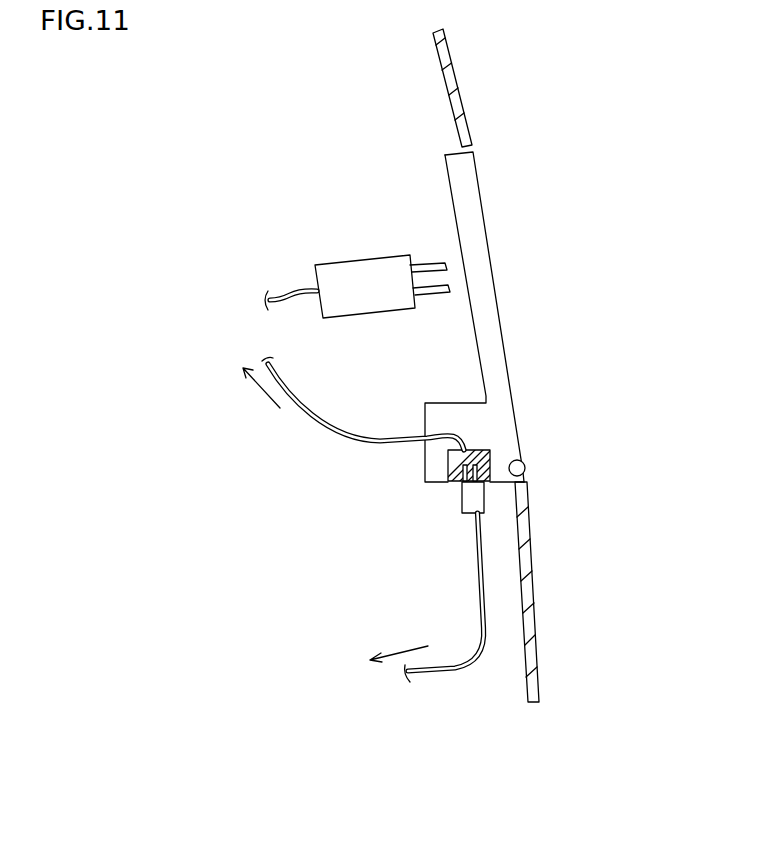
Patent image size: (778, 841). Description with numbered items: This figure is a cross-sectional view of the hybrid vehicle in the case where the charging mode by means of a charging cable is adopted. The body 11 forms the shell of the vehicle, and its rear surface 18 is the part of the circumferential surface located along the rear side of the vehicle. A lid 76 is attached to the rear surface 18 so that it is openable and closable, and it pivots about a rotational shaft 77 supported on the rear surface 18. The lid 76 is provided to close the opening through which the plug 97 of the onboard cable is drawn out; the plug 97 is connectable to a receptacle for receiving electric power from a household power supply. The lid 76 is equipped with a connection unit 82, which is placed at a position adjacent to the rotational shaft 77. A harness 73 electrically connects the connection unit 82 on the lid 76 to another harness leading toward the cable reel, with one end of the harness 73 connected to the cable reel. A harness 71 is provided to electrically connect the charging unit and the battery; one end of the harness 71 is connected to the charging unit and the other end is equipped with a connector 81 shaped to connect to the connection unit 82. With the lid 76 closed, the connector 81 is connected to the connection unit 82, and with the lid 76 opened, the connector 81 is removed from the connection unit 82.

The body 11 is at (473, 94).
The lid 76 is at (485, 272).
The rear surface 18 is at (528, 587).
The connection unit 82 is at (490, 453).
The rotational shaft 77 is at (525, 468).
The connector 81 is at (473, 495).
The harness 73 is at (318, 418).
The harness 71 is at (432, 670).
The plug 97 is at (368, 272).